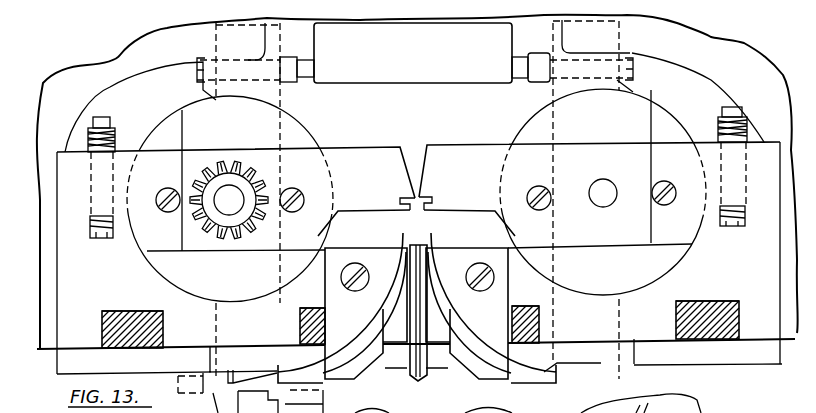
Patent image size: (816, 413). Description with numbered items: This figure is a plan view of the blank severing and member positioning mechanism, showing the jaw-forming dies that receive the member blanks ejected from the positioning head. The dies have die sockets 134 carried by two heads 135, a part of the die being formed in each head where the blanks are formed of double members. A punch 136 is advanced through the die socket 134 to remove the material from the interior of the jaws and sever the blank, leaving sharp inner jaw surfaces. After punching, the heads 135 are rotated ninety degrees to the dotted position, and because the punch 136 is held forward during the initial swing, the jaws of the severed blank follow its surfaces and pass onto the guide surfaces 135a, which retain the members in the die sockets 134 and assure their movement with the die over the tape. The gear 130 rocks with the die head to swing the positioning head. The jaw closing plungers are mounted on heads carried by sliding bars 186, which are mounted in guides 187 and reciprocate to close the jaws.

The gear 130 is at (216, 237).
The die socket 134 is at (407, 197).
The head 135 is at (344, 155).
The guide surface 135a is at (369, 321).
The punch 136 is at (408, 372).
The sliding bar 186 is at (158, 327).
The guide 187 is at (158, 298).